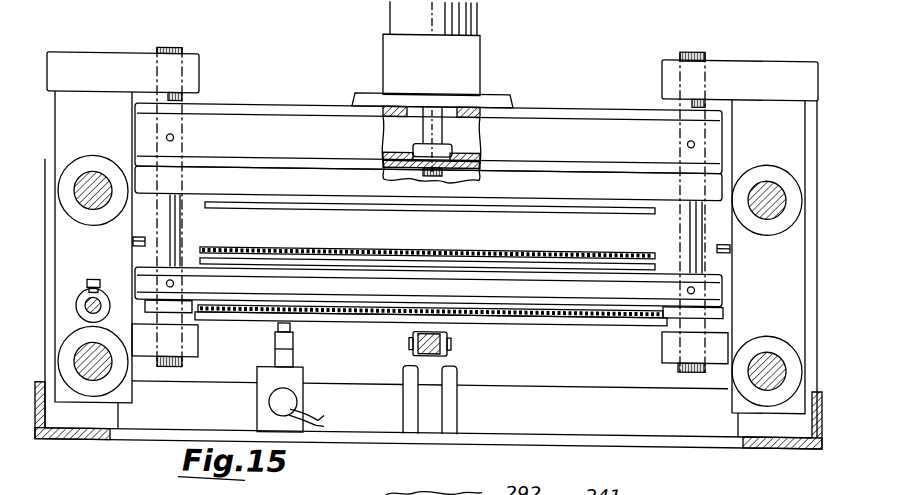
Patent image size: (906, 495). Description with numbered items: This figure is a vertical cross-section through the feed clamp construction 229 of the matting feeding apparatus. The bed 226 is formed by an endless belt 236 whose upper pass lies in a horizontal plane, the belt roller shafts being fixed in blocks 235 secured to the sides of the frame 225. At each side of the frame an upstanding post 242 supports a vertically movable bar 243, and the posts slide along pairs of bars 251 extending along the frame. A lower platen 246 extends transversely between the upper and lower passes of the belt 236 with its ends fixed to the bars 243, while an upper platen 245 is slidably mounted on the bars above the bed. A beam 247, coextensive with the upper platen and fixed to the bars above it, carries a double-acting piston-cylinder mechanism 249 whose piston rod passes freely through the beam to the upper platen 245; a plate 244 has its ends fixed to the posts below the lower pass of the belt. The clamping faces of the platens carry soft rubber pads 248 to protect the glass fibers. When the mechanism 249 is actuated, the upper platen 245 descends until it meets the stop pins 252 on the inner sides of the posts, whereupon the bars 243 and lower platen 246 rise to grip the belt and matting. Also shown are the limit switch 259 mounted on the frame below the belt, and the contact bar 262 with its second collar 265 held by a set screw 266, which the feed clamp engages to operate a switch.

The frame 225 is at (338, 380).
The bed 226 is at (397, 245).
The feed clamp construction 229 is at (528, 100).
The blocks 235 is at (45, 162).
The endless belt 236 is at (325, 246).
The upstanding post 242 is at (133, 395).
The vertically movable bar 243 is at (180, 224).
The plate 244 is at (549, 318).
The upper platen 245 is at (293, 186).
The lower platen 246 is at (518, 275).
The beam 247 is at (258, 103).
The soft rubber pads 248 is at (262, 203).
The double-acting piston-cylinder mechanism 249 is at (388, 22).
The bars 251 is at (92, 176).
The stop pins 252 is at (140, 236).
The limit switch 259 is at (100, 316).
The contact bar 262 is at (276, 348).
The second collar 265 is at (100, 294).
The set screw 266 is at (93, 280).